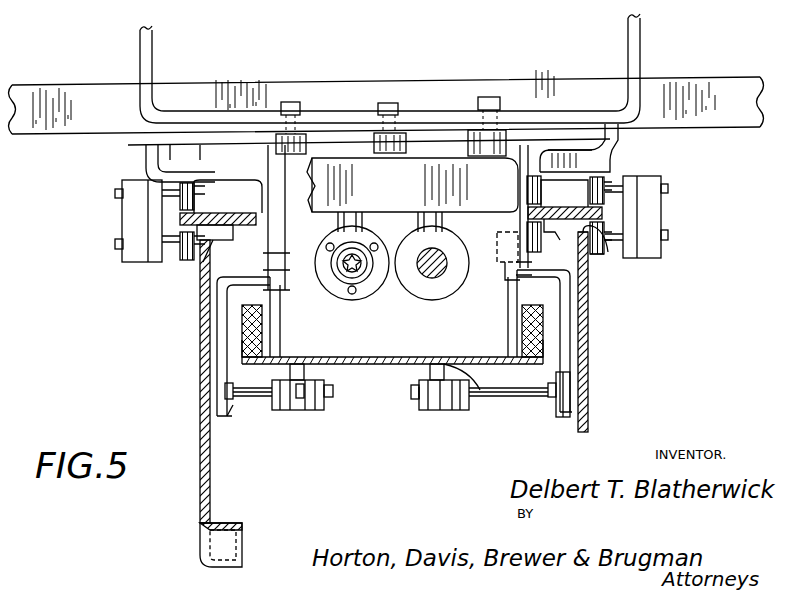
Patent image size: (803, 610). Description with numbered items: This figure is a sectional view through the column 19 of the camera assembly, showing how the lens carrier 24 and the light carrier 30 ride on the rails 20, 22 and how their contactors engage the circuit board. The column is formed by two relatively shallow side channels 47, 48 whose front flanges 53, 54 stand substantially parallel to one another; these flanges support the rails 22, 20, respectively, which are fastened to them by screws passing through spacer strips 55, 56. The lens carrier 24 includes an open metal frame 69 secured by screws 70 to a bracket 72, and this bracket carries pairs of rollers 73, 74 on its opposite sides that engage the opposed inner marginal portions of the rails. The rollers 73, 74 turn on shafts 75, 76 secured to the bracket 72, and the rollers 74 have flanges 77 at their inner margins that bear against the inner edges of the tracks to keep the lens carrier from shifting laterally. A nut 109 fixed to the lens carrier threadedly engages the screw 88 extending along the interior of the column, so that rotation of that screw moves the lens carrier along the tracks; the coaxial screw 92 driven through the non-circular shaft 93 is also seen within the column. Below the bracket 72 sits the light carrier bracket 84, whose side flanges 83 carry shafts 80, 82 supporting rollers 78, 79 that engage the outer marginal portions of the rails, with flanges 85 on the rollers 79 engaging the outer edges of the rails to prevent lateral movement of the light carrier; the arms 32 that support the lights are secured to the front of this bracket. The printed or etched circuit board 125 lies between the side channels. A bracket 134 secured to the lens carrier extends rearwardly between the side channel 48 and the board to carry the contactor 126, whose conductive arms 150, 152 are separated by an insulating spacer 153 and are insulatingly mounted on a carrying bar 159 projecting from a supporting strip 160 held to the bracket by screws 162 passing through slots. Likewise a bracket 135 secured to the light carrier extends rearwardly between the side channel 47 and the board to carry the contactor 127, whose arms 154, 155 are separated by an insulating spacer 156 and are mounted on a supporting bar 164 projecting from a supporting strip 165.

The column 19 is at (596, 352).
The rail 20 is at (565, 199).
The rail 22 is at (228, 214).
The lens carrier 24 is at (641, 53).
The light carrier 30 is at (640, 244).
The arms 32 is at (60, 100).
The side channel 47 is at (200, 372).
The side channel 48 is at (584, 380).
The front flange 53 is at (205, 243).
The front flange 54 is at (595, 256).
The spacer strip 55 is at (238, 232).
The spacer strip 56 is at (550, 225).
The open metal frame 69 is at (468, 86).
The screws 70 is at (290, 104).
The bracket 72 is at (405, 177).
The rollers 73 is at (537, 165).
The rollers 74 is at (522, 272).
The shafts 75 is at (519, 196).
The shafts 76 is at (490, 242).
The flanges 77 is at (540, 293).
The rollers 78 is at (188, 262).
The rollers 79 is at (180, 180).
The shafts 80 is at (115, 244).
The shafts 82 is at (115, 194).
The side flanges 83 is at (155, 217).
The light carrier bracket 84 is at (560, 148).
The flanges 85 is at (178, 188).
The screw 88 is at (427, 274).
The screw 92 is at (342, 275).
The shaft 93 is at (358, 277).
The nut 109 is at (450, 243).
The printed or etched circuit board 125 is at (497, 372).
The contactor 126 is at (458, 407).
The contactor 127 is at (292, 404).
The bracket 134 is at (566, 330).
The bracket 135 is at (216, 340).
The conductive arm 150 is at (423, 402).
The conductive arm 152 is at (452, 372).
The insulating spacer 153 is at (440, 406).
The conductive arm 154 is at (287, 400).
The conductive arm 155 is at (313, 408).
The insulating spacer 156 is at (298, 408).
The carrying bar 159 is at (403, 405).
The supporting strip 160 is at (560, 418).
The screws 162 is at (233, 394).
The supporting bar 164 is at (332, 398).
The supporting strip 165 is at (232, 414).